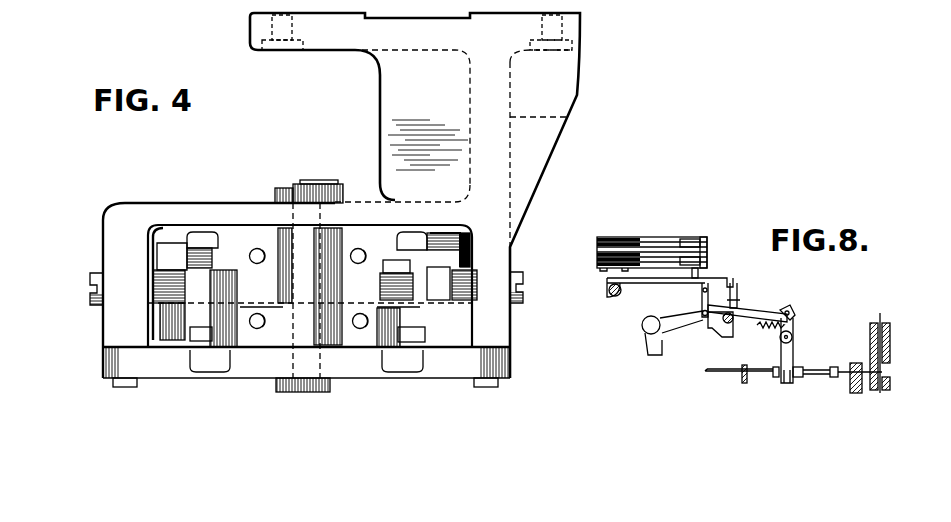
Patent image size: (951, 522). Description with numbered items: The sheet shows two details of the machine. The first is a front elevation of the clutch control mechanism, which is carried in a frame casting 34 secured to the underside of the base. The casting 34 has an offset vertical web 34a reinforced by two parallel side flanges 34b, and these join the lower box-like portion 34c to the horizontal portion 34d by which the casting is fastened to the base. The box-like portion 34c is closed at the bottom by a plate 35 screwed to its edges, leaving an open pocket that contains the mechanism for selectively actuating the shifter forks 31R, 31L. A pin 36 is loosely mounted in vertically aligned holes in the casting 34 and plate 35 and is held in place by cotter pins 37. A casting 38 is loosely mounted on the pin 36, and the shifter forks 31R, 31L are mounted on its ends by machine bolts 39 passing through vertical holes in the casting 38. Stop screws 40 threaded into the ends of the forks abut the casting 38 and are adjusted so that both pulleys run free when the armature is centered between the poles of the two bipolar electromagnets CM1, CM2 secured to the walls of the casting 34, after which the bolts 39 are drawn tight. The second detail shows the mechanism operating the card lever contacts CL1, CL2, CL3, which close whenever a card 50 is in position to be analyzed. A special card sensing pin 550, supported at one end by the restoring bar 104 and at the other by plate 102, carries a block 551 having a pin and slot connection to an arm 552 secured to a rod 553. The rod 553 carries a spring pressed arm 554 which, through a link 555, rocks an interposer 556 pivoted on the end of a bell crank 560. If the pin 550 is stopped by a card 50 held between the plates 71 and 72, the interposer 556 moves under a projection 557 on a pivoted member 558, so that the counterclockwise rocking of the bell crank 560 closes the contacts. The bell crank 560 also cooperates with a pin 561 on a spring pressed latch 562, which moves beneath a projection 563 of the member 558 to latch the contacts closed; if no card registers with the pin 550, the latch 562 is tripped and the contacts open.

In FIG. 4, the frame casting 34 is at (518, 207).
In FIG. 4, the offset vertical web 34a is at (570, 117).
In FIG. 4, the side flanges 34b is at (395, 101).
In FIG. 4, the box-like portion 34c is at (120, 243).
In FIG. 4, the horizontal portion 34d is at (258, 28).
In FIG. 4, the plate 35 is at (258, 365).
In FIG. 4, the pin 36 is at (308, 186).
In FIG. 4, the cotter pins 37 is at (283, 187).
In FIG. 4, the casting 38 is at (243, 247).
In FIG. 4, the machine bolts 39 is at (227, 265).
In FIG. 4, the stop screws 40 is at (157, 287).
In FIG. 4, the left shifter fork 31L is at (200, 333).
In FIG. 4, the right shifter fork 31R is at (412, 338).
In FIG. 4, the bipolar electromagnet CM1 is at (167, 243).
In FIG. 4, the bipolar electromagnet CM2 is at (443, 253).
In FIG. 8, the card lever contact CL1 is at (713, 243).
In FIG. 8, the card lever contact CL2 is at (680, 262).
In FIG. 8, the card lever contact CL3 is at (678, 243).
In FIG. 8, the projection 557 is at (712, 280).
In FIG. 8, the pivoted member 558 is at (630, 284).
In FIG. 8, the projection 563 is at (730, 284).
In FIG. 8, the interposer 556 is at (700, 300).
In FIG. 8, the spring pressed latch 562 is at (733, 307).
In FIG. 8, the link 555 is at (788, 309).
In FIG. 8, the spring pressed arm 554 is at (793, 323).
In FIG. 8, the rod 553 is at (792, 337).
In FIG. 8, the arm 552 is at (781, 350).
In FIG. 8, the pin 561 is at (715, 322).
In FIG. 8, the bell crank 560 is at (675, 333).
In FIG. 8, the plate 102 is at (737, 378).
In FIG. 8, the block 551 is at (797, 378).
In FIG. 8, the special card sensing pin 550 is at (842, 377).
In FIG. 8, the restoring bar 104 is at (855, 363).
In FIG. 8, the plate 72 is at (872, 325).
In FIG. 8, the card 50 is at (882, 313).
In FIG. 8, the plate 71 is at (890, 323).